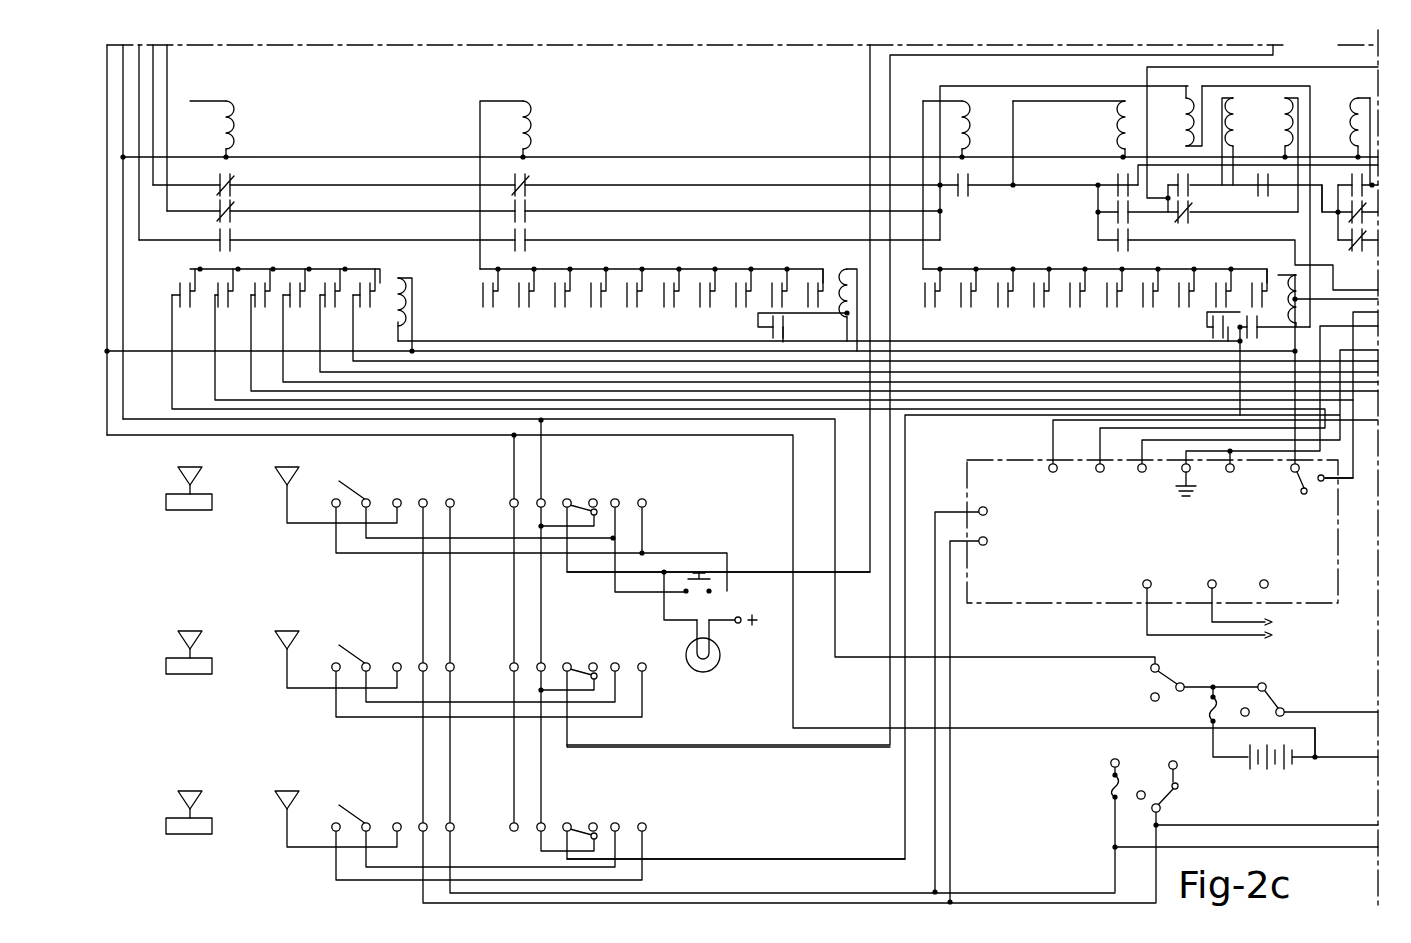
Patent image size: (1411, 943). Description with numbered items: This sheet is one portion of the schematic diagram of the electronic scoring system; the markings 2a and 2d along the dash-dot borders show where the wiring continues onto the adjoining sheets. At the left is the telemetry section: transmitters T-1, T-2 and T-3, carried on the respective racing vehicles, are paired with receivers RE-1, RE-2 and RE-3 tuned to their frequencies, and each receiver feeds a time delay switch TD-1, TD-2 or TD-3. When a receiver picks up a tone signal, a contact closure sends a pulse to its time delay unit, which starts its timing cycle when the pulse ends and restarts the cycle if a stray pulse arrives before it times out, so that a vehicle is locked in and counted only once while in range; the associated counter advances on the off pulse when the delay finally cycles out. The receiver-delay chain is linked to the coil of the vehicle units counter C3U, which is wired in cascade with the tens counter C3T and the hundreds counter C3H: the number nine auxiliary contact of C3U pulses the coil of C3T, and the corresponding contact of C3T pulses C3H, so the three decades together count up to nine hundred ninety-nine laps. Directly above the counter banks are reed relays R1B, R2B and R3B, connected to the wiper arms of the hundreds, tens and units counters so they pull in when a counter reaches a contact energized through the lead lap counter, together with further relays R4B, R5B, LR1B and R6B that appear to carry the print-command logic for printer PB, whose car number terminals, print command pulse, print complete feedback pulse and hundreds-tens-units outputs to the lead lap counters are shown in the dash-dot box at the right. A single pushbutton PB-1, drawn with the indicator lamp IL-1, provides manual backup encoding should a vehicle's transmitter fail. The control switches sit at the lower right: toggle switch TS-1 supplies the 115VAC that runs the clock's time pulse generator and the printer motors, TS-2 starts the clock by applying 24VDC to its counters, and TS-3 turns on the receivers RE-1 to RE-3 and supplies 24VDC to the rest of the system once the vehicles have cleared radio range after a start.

The sheet connector to FIG. 2a is at (692, 47).
The sheet connector to FIG. 2d is at (1365, 489).
The reed relay R1B is at (226, 130).
The reed relay R2B is at (520, 184).
The reed relay R3B is at (962, 130).
The relay coil R4B is at (1069, 130).
The relay coil R5B is at (1176, 116).
The latching relay coil LR1B is at (1260, 155).
The relay coil R6B is at (1346, 128).
The hundreds counter C3H is at (292, 299).
The tens counter C3T is at (668, 298).
The units counter C3U is at (1116, 292).
The transmitter T-1 is at (189, 500).
The transmitter T-2 is at (189, 664).
The transmitter T-3 is at (189, 824).
The receiver RE-1 is at (364, 490).
The receiver RE-2 is at (364, 654).
The receiver RE-3 is at (364, 814).
The time delay switch TD-1 is at (578, 498).
The time delay switch TD-2 is at (578, 662).
The time delay switch TD-3 is at (578, 823).
The pushbutton PB-1 is at (696, 593).
The indicator lamp IL-1 is at (721, 655).
The digital printer PB is at (1113, 605).
The toggle switch TS-1 is at (1257, 831).
The toggle switch TS-2 is at (1309, 695).
The toggle switch TS-3 is at (1206, 675).
The 115 volt AC supply 115VAC is at (1244, 817).
The 24 volt DC supply 24VDC is at (1294, 741).